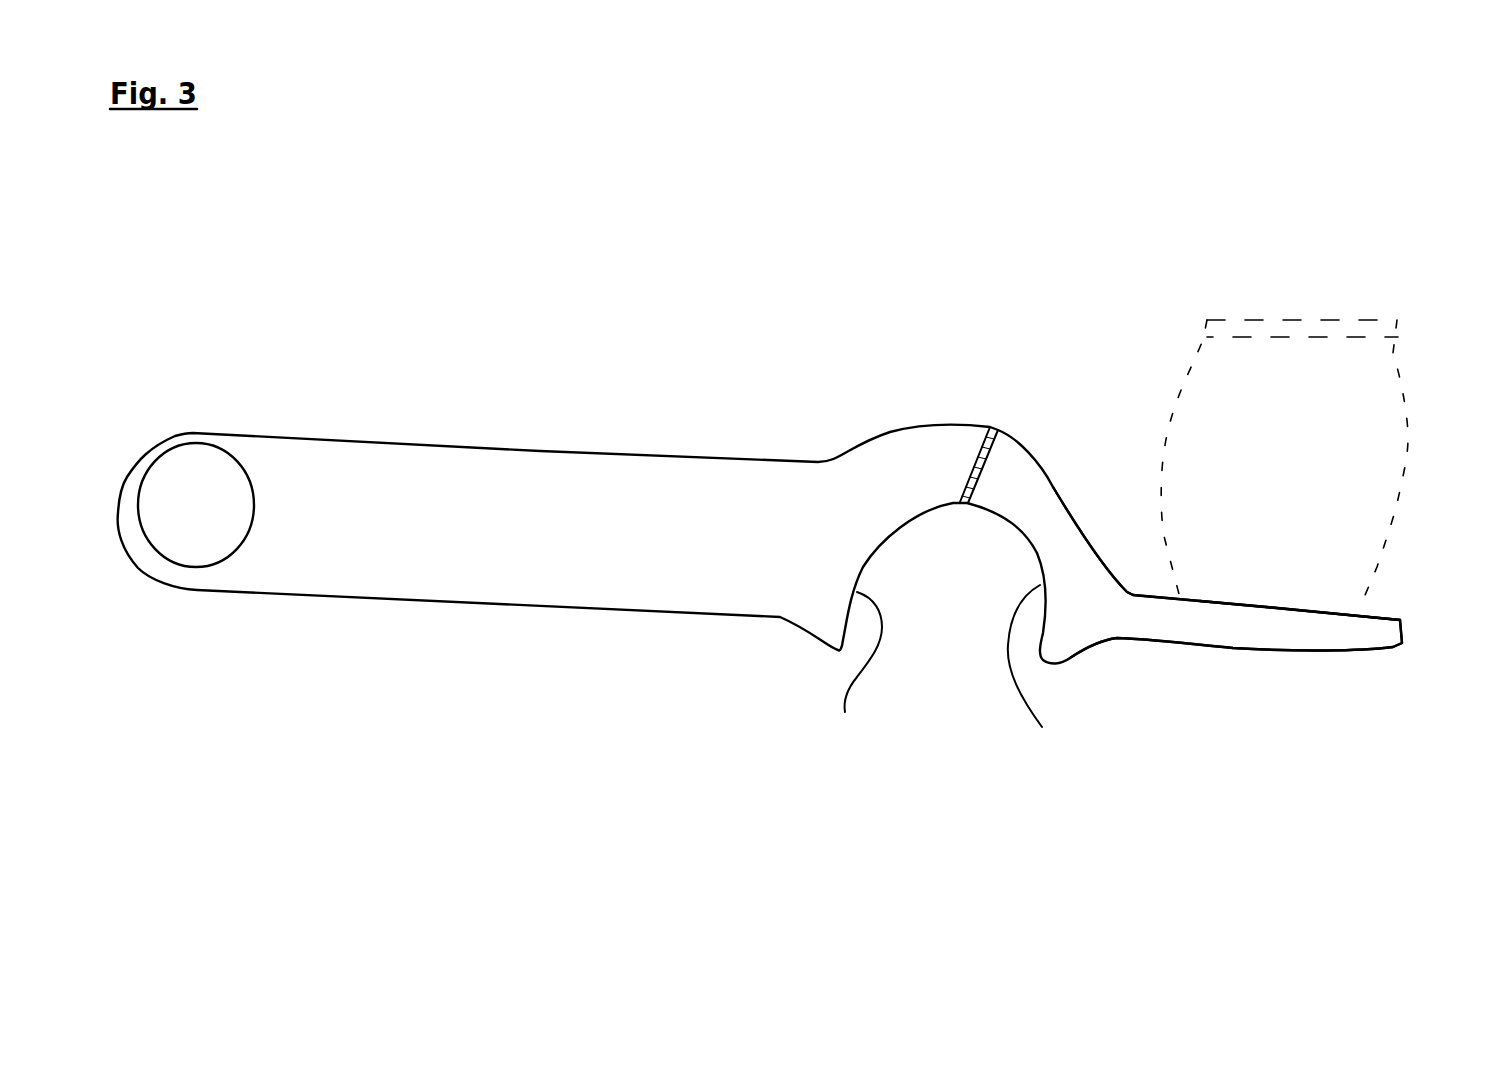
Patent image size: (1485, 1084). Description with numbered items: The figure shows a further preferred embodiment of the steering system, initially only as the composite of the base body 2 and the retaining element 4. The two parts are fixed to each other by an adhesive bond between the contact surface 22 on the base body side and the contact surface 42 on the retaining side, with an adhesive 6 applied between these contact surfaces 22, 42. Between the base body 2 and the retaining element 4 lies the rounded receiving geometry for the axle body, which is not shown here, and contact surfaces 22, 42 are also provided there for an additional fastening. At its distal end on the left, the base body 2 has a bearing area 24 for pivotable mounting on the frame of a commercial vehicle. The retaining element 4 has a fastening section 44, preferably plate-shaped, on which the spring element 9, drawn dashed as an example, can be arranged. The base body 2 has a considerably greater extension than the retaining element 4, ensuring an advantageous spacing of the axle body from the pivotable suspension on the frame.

The base body 2 is at (598, 453).
The bearing area 24 is at (213, 465).
The contact surface on the base body side 22 is at (973, 457).
The contact surface on the retaining side 42 is at (968, 472).
The adhesive 6 is at (993, 427).
The retaining element 4 is at (1088, 552).
The fastening section 44 is at (1252, 607).
The spring element 9 is at (1393, 375).